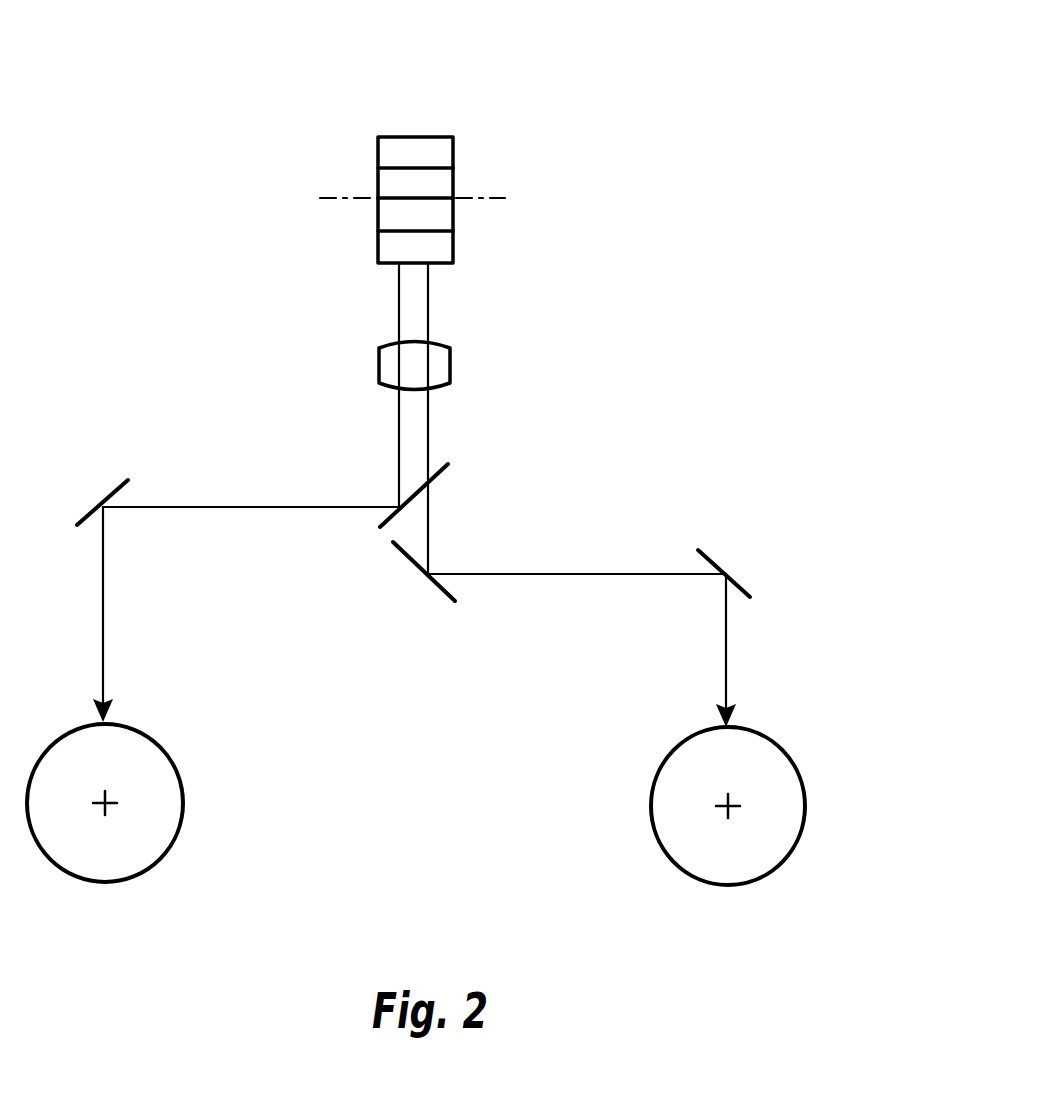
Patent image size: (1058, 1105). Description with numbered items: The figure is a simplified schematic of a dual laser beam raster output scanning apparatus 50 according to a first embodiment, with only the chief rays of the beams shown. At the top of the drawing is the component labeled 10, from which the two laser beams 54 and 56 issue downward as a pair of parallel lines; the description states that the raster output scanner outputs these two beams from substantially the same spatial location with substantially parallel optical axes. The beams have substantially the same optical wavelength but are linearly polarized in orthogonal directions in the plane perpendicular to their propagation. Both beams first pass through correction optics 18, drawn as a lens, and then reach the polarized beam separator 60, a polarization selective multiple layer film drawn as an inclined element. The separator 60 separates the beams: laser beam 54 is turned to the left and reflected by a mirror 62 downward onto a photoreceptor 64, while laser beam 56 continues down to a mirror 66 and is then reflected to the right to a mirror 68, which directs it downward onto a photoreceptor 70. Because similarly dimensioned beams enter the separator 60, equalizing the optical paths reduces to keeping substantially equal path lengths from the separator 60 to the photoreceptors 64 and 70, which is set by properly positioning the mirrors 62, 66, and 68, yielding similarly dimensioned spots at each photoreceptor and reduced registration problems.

The first embodiment apparatus 50 is at (621, 58).
The laser 10 is at (418, 140).
The laser beam 54 is at (399, 318).
The laser beam 56 is at (428, 312).
The correction optics 18 is at (450, 368).
The mirror 62 is at (118, 488).
The polarized beam separator 60 is at (437, 470).
The mirror 66 is at (410, 553).
The mirror 68 is at (712, 556).
The photoreceptor 64 is at (157, 742).
The photoreceptor 70 is at (765, 737).